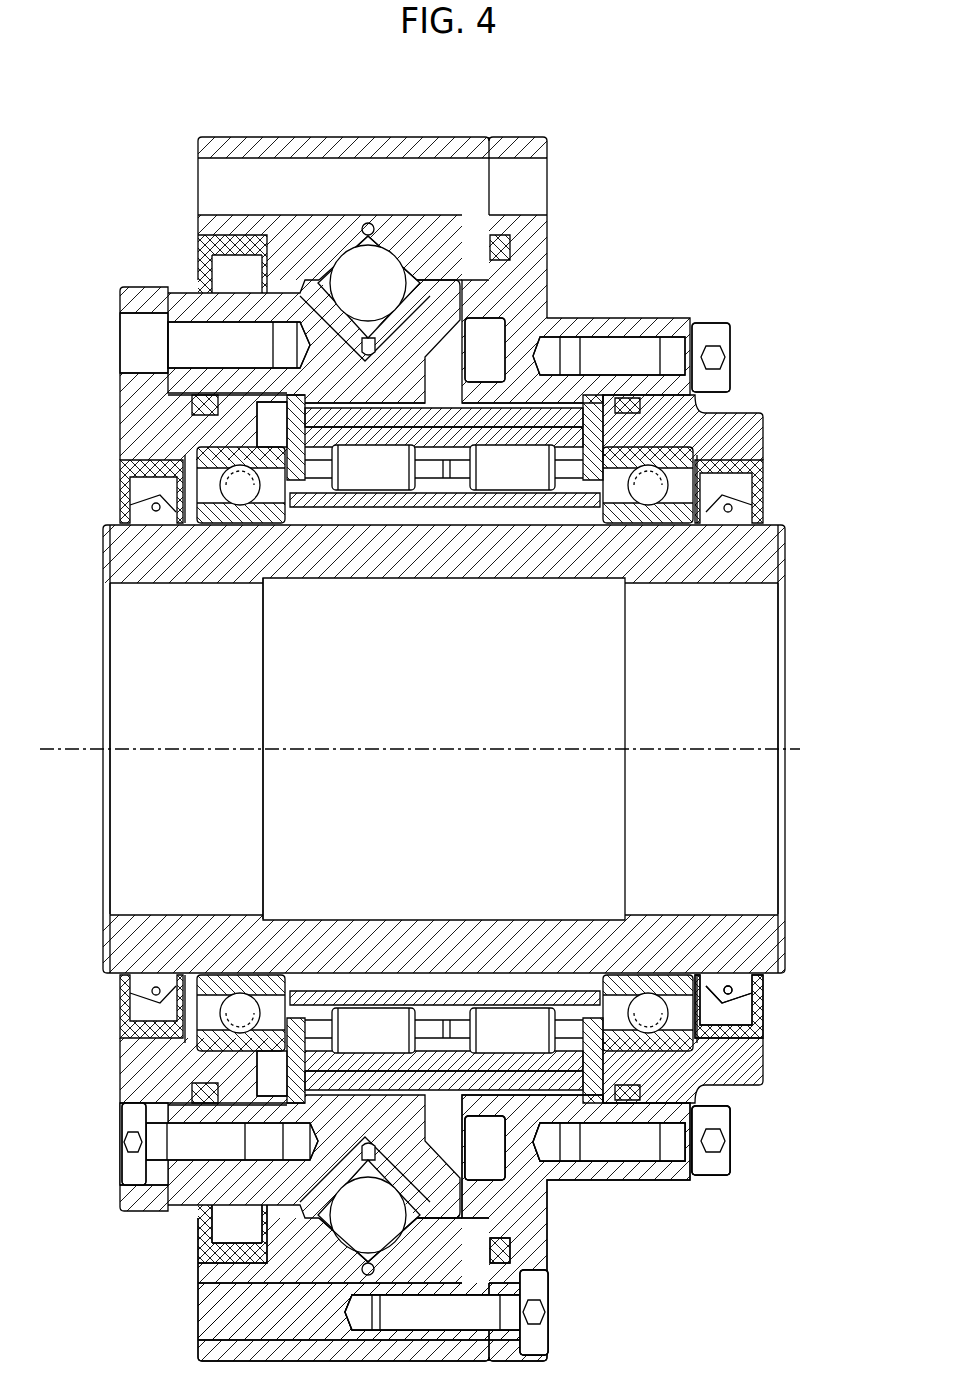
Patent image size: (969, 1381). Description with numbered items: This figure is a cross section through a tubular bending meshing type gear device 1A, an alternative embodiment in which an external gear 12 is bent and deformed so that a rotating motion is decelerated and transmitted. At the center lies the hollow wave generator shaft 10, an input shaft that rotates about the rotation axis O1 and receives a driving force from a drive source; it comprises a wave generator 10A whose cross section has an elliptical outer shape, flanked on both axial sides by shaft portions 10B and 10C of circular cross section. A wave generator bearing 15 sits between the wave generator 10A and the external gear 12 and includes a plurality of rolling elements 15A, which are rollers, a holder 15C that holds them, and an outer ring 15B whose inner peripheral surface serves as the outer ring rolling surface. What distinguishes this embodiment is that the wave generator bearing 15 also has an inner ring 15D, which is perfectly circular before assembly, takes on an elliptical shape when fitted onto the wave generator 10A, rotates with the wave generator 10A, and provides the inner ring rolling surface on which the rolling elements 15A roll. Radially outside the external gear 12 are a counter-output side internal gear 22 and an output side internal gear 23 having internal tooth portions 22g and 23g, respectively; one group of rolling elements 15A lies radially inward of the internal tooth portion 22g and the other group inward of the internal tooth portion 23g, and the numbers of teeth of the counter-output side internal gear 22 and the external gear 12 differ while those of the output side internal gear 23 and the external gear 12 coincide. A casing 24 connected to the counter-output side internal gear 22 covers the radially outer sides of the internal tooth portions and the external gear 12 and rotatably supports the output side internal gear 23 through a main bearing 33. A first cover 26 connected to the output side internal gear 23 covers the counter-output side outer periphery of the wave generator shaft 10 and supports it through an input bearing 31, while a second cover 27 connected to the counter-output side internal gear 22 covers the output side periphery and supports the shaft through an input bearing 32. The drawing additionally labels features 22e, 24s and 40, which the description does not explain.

The bending meshing type gear device 1A is at (448, 710).
The main bearing 33 is at (372, 262).
The casing 24 is at (453, 137).
The output side internal gear 23 is at (196, 300).
The second cover 27 is at (163, 299).
The internal tooth portion 23g is at (335, 407).
The counter-output side internal gear 22 is at (538, 266).
The internal tooth portion 22g is at (530, 400).
The external gear 12 is at (432, 418).
The first cover 26 is at (745, 430).
The input bearing 32 is at (148, 462).
The input bearing 31 is at (742, 474).
The holder 15C is at (305, 470).
The rolling element 15A is at (360, 487).
The outer ring 15B is at (447, 480).
The inner ring 15D is at (532, 505).
The wave generator bearing 15 is at (570, 492).
The wave generator shaft 10 is at (760, 632).
The rotation axis O1 is at (448, 749).
The shaft portion 10C is at (263, 910).
The wave generator 10A is at (623, 901).
The shaft portion 10B is at (778, 910).
The seal 40 is at (763, 1013).
The end surface 22e is at (690, 1047).
The bolt hole portion 24s is at (300, 1228).